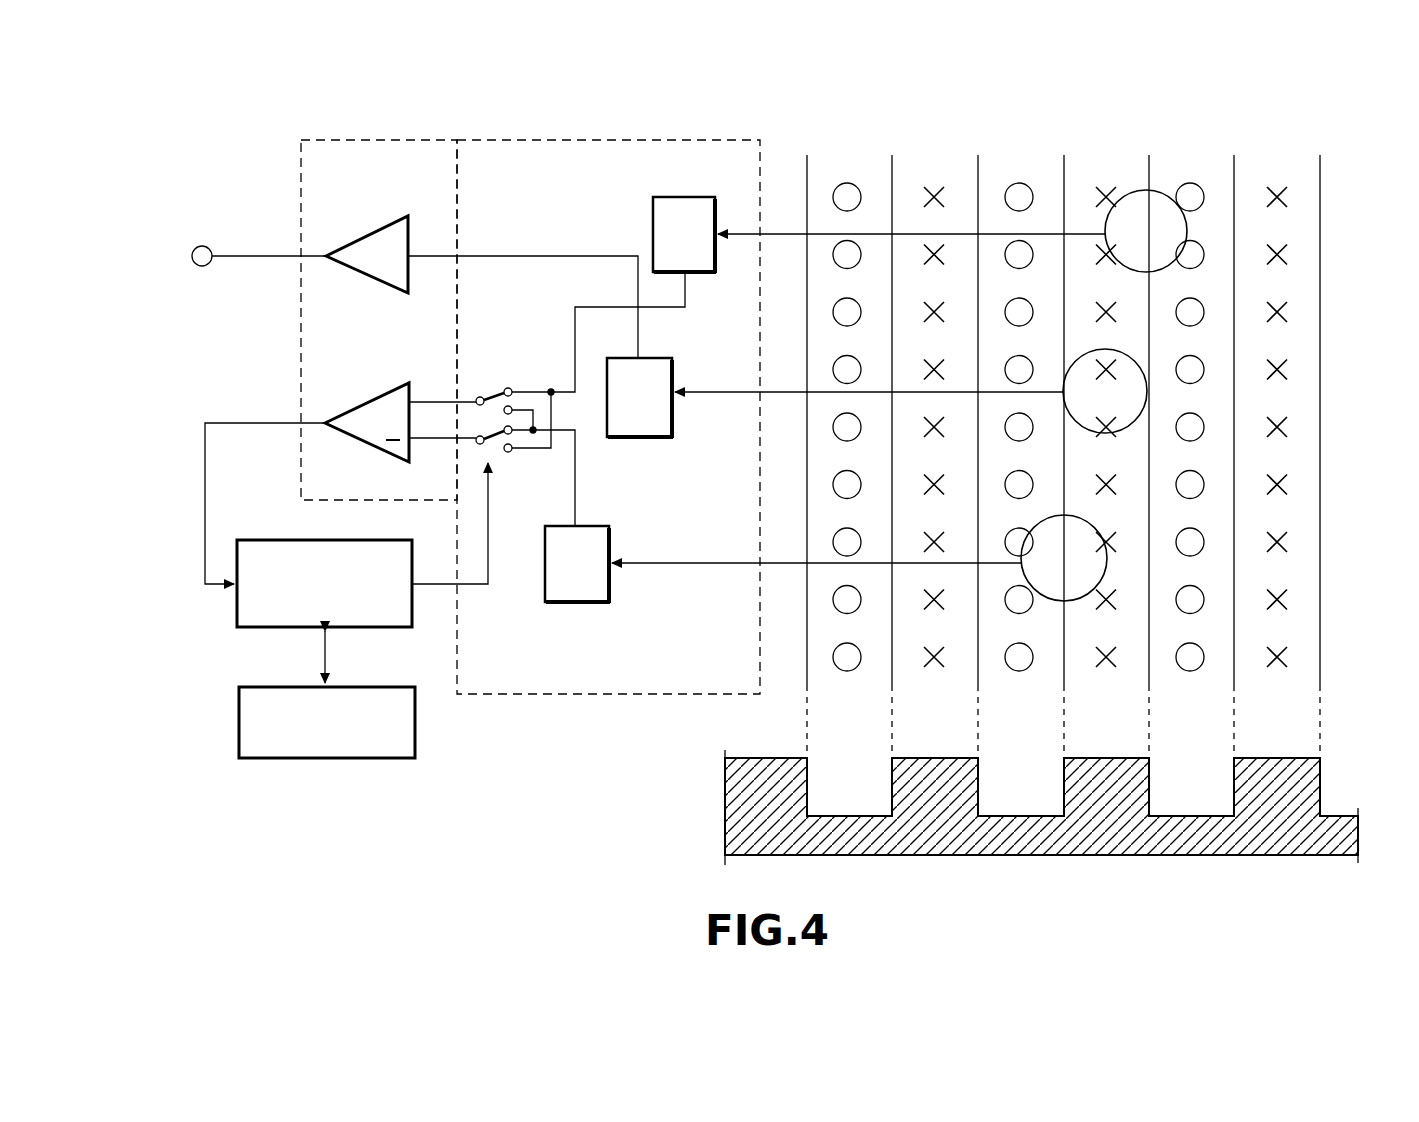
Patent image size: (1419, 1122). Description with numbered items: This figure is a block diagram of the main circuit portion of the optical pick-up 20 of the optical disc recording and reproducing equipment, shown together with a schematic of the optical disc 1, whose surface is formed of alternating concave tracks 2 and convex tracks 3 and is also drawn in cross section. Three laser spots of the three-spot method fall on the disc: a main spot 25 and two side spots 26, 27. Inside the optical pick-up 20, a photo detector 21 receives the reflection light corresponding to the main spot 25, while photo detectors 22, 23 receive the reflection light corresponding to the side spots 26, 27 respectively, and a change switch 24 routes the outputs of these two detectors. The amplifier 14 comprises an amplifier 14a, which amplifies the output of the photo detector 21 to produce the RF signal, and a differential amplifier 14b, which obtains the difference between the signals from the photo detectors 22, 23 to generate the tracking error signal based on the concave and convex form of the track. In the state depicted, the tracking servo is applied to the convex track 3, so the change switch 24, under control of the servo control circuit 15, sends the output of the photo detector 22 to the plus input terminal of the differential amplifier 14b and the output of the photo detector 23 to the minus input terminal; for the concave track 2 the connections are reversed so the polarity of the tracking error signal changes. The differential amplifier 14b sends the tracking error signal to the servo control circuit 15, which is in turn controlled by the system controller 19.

The optical disc 1 is at (1354, 394).
The concave track 2 is at (1012, 157).
The convex track 3 is at (930, 157).
The amplifier 14 is at (366, 140).
The amplifier 14a is at (365, 232).
The differential amplifier 14b is at (368, 400).
The servo control circuit 15 is at (247, 628).
The system controller 19 is at (239, 720).
The optical pick-up 20 is at (603, 140).
The photo detector 21 is at (632, 438).
The photo detector 22 is at (653, 214).
The photo detector 23 is at (578, 603).
The change switch 24 is at (491, 388).
The main spot 25 is at (1130, 428).
The side spot 26 is at (1170, 262).
The side spot 27 is at (1093, 530).